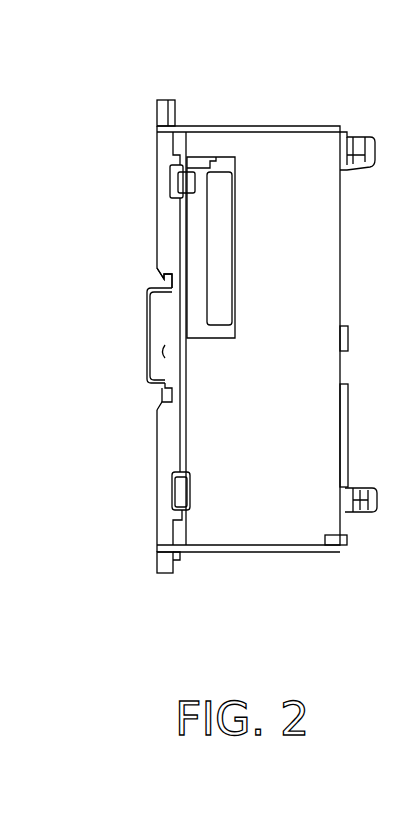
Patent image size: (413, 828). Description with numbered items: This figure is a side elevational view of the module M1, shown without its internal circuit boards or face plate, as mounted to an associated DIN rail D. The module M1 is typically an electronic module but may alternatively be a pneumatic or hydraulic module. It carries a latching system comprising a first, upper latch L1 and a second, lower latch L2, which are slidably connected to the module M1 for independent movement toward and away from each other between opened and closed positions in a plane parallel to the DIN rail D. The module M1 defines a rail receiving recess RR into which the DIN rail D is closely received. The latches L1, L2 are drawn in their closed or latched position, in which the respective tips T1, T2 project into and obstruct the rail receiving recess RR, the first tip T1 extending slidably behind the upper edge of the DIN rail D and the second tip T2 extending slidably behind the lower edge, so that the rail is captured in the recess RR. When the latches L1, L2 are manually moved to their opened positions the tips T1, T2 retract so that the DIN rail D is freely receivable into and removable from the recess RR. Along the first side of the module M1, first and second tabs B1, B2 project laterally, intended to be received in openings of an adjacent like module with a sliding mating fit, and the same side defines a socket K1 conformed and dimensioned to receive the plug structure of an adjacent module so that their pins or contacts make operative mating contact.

The module M1 is at (267, 307).
The socket K1 is at (266, 164).
The first latch L1 is at (168, 100).
The second latch L2 is at (168, 575).
The first tab B1 is at (172, 185).
The second tab B2 is at (178, 492).
The first tip T1 is at (160, 278).
The second tip T2 is at (162, 397).
The DIN rail D is at (148, 321).
The rail receiving recess RR is at (166, 352).